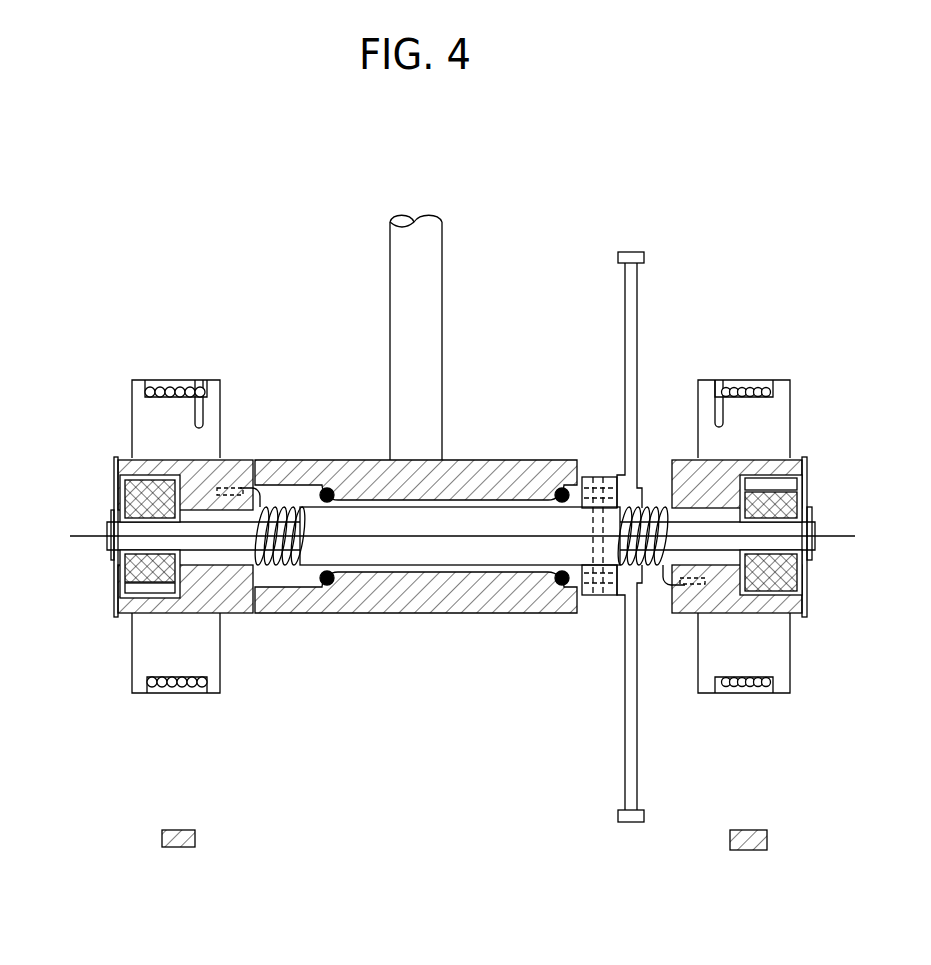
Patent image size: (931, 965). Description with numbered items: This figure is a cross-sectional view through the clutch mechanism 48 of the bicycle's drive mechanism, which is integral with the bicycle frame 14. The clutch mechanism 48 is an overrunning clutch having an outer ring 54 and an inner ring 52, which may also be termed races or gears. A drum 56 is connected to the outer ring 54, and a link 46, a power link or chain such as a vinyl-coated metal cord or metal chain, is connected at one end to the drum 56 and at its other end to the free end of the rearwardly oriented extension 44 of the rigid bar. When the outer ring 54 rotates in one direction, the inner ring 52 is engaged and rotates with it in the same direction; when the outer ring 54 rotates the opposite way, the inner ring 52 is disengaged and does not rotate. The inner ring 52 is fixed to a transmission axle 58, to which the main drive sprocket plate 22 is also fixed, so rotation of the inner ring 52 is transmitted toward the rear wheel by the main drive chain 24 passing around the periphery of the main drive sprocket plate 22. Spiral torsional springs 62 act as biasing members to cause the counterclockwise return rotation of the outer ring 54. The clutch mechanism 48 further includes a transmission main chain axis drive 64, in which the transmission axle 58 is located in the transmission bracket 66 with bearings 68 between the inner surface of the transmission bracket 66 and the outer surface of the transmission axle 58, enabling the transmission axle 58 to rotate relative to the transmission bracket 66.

The bicycle frame 14 is at (427, 287).
The main drive sprocket plate 22 is at (632, 328).
The main drive chain 24 is at (642, 250).
The rearwardly oriented extension 44 is at (183, 838).
The link 46 is at (172, 390).
The clutch mechanism 48 is at (457, 501).
The inner ring 52 is at (132, 500).
The outer ring 54 is at (213, 597).
The drum 56 is at (142, 405).
The transmission axle 58 is at (375, 526).
The spiral torsional springs 62 is at (283, 550).
The transmission main chain axis drive 64 is at (437, 578).
The transmission bracket 66 is at (473, 470).
The bearings 68 is at (329, 585).